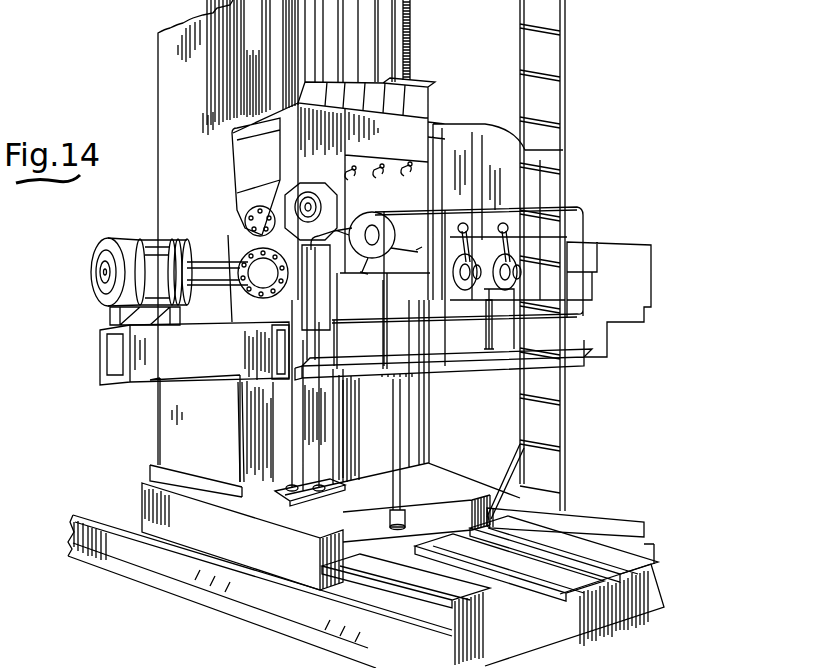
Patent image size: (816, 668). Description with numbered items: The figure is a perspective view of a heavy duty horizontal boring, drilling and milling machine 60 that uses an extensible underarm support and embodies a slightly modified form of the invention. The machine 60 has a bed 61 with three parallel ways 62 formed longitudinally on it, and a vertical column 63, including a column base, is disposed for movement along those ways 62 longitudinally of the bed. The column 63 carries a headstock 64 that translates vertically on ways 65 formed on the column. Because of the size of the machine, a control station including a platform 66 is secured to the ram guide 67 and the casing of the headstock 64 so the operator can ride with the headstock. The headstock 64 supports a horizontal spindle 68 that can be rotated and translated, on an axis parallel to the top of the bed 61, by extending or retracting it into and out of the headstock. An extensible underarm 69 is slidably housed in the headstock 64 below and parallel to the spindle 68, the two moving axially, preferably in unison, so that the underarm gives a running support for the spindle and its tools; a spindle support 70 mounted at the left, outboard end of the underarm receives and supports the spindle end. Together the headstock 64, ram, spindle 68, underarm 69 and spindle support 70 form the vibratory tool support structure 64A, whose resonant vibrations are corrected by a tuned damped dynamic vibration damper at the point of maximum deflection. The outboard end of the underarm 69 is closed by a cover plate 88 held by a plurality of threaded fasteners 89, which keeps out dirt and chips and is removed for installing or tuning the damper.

The horizontal boring, drilling and milling machine 60 is at (590, 98).
The bed 61 is at (655, 600).
The ways 62 is at (650, 535).
The vertical column 63 is at (172, 126).
The headstock 64 is at (222, 208).
The vibratory tool support structure 64A is at (211, 400).
The ways 65 is at (257, 95).
The platform 66 is at (470, 371).
The ram guide 67 is at (630, 235).
The horizontal spindle 68 is at (218, 264).
The extensible underarm 69 is at (148, 384).
The spindle support 70 is at (140, 236).
The cover plate 88 is at (168, 353).
The threaded fasteners 89 is at (115, 348).